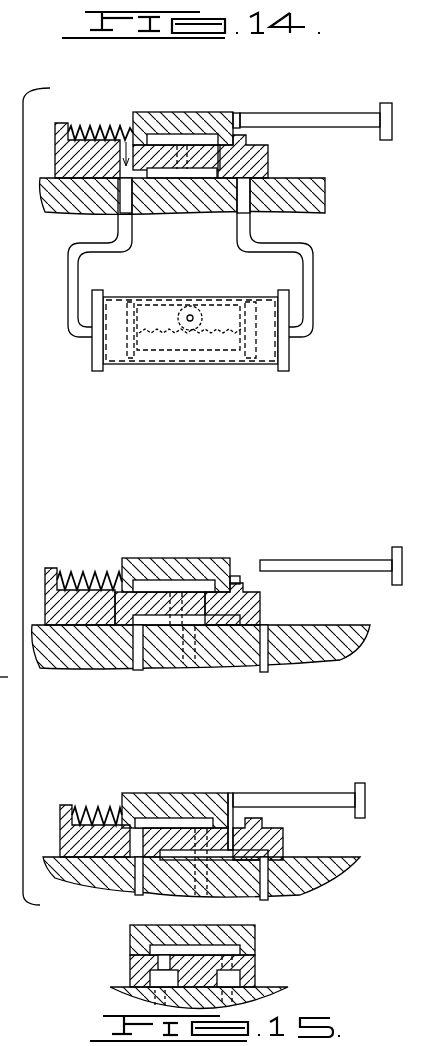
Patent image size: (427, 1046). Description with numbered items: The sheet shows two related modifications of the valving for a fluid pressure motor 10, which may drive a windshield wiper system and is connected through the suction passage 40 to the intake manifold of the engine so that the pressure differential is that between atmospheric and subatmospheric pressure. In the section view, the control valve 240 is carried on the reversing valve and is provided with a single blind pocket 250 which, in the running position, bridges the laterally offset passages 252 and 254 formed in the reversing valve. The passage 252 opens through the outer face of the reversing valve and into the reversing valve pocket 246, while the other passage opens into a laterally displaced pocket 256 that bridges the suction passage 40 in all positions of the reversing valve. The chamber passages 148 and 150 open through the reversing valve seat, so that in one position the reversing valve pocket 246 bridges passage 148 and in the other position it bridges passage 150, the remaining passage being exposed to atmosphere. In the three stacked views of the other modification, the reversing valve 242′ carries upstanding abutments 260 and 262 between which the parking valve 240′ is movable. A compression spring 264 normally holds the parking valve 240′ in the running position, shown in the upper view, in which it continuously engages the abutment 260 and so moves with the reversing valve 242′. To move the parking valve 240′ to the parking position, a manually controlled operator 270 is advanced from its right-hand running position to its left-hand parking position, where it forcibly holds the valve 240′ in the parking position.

In FIG. 14, the motor 10 is at (179, 368).
In FIG. 15, the suction passage 40 is at (270, 985).
In FIG. 14, the chamber passage 148 is at (313, 268).
In FIG. 14, the chamber passage 150 is at (82, 266).
In FIG. 15, the chamber passage 150 is at (150, 1000).
In FIG. 15, the control valve 240 is at (124, 937).
In FIG. 14, the parking valve 240′ is at (183, 113).
In FIG. 14, the reversing valve 242′ is at (277, 167).
In FIG. 15, the reversing valve pocket 246 is at (150, 978).
In FIG. 15, the blind pocket 250 is at (250, 946).
In FIG. 15, the passage 252 is at (160, 962).
In FIG. 15, the passage 254 is at (262, 955).
In FIG. 15, the laterally displaced pocket 256 is at (240, 974).
In FIG. 14, the upstanding abutment 260 is at (240, 130).
In FIG. 14, the upstanding abutment 262 is at (67, 122).
In FIG. 14, the compression spring 264 is at (100, 123).
In FIG. 14, the manually controlled operator 270 is at (318, 119).